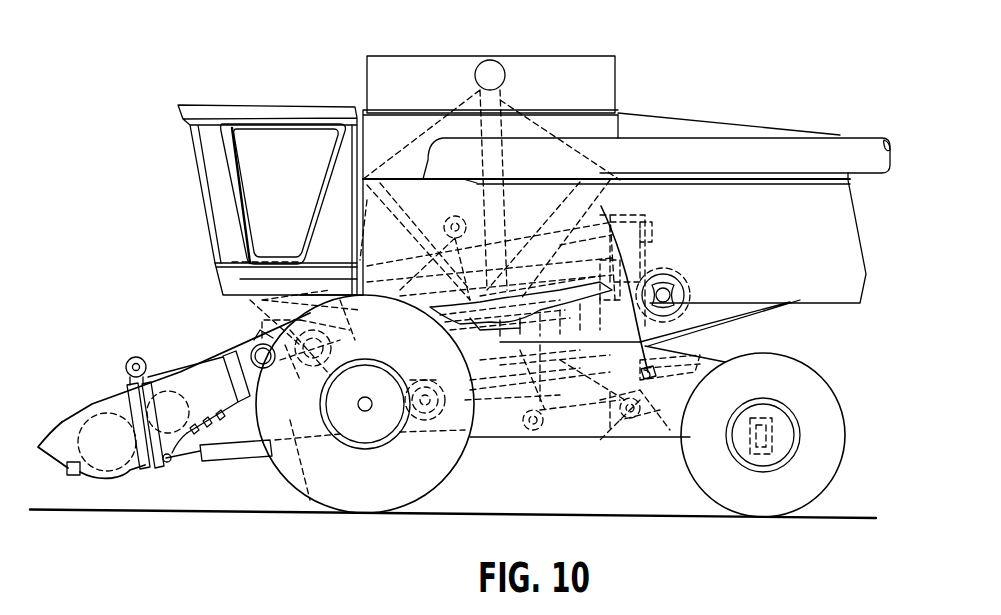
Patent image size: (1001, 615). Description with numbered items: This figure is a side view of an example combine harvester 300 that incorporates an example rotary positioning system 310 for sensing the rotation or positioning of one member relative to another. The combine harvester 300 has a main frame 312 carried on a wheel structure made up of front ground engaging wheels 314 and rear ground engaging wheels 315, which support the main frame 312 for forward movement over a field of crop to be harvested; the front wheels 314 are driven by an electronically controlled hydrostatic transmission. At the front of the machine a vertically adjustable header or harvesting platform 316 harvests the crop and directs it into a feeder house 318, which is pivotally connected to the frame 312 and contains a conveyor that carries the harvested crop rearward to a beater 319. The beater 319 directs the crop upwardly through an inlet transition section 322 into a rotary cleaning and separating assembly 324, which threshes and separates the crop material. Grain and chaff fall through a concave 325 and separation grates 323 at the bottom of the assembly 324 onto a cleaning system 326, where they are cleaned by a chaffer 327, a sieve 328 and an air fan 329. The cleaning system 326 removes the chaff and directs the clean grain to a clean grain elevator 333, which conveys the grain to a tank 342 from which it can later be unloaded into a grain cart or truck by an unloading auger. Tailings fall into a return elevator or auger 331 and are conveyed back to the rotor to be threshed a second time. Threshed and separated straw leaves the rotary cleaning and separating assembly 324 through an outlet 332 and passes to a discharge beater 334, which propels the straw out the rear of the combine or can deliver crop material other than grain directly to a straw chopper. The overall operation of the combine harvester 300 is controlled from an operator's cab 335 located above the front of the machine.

The combine harvester 300 is at (826, 52).
The rotary positioning system 310 is at (780, 404).
The main frame 312 is at (712, 346).
The front ground engaging wheels 314 is at (258, 336).
The rear ground engaging wheels 315 is at (846, 427).
The header 316 is at (80, 398).
The feeder house 318 is at (200, 366).
The beater 319 is at (262, 300).
The inlet transition section 322 is at (232, 262).
The separation grates 323 is at (566, 306).
The rotary cleaning and separating assembly 324 is at (411, 262).
The concave 325 is at (478, 420).
The cleaning system 326 is at (470, 306).
The chaffer 327 is at (700, 378).
The sieve 328 is at (687, 435).
The air fan 329 is at (418, 448).
The return elevator or auger 331 is at (637, 440).
The outlet 332 is at (656, 250).
The clean grain elevator 333 is at (520, 166).
The discharge beater 334 is at (685, 292).
The operator's cab 335 is at (268, 105).
The tank 342 is at (622, 130).